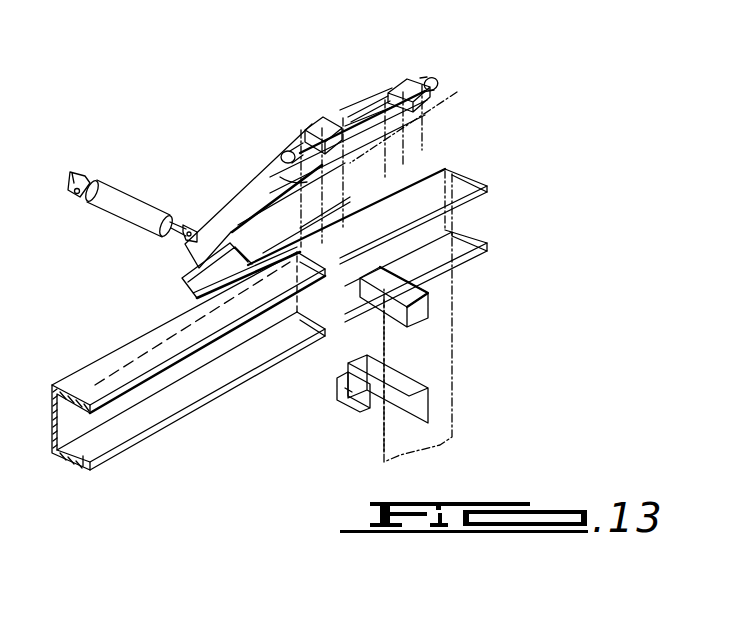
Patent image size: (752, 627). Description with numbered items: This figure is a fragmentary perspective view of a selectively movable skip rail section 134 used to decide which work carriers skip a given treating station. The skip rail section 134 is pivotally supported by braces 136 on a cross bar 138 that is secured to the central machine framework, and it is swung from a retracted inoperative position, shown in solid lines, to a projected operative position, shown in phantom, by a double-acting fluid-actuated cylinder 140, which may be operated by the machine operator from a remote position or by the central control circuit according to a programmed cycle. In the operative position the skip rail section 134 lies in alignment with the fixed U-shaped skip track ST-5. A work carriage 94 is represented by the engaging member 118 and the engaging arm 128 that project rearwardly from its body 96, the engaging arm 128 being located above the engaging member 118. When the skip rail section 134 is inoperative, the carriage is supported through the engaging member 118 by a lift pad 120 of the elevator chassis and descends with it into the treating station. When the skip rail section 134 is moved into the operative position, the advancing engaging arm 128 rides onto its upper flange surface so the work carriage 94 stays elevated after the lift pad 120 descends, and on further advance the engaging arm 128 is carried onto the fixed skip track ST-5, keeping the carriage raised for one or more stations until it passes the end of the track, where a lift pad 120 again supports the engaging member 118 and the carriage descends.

The skip track ST-5 is at (82, 468).
The skip rail section 134 is at (182, 283).
The braces 136 is at (457, 92).
The cross bar 138 is at (347, 110).
The double-acting fluid-actuated cylinder 140 is at (117, 193).
The engaging arm 128 is at (373, 293).
The engaging member 118 is at (370, 377).
The lift pad 120 is at (337, 395).
The work carriage 94 is at (449, 343).
The body 96 is at (443, 375).